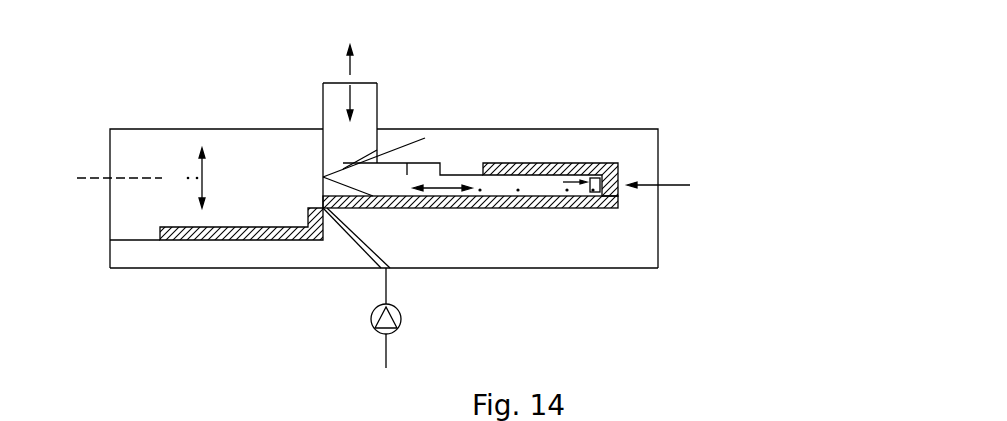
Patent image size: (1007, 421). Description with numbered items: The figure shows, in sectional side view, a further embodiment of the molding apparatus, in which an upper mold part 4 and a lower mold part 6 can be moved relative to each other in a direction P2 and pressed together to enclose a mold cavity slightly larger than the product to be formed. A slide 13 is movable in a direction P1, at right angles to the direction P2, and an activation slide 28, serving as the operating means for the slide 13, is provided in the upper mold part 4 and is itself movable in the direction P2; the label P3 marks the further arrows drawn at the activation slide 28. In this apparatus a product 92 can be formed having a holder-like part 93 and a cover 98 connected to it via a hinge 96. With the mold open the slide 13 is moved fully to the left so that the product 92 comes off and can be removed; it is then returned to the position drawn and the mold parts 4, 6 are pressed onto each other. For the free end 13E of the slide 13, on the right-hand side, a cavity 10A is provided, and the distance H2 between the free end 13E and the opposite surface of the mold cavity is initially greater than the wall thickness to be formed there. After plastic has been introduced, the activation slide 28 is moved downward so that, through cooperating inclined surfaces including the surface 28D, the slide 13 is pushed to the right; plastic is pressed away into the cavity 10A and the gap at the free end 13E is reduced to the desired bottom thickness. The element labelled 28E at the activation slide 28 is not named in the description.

The upper mold part 4 is at (658, 149).
The lower mold part 6 is at (658, 252).
The activation slide 28 is at (370, 83).
The valve flap 28E is at (425, 138).
The inclined surface 28D is at (387, 265).
The hinge 96 is at (315, 182).
The cover 98 is at (245, 240).
The holder-like part 93 is at (588, 155).
The product 92 is at (480, 190).
The slide 13 is at (518, 190).
The free end of the slide 13E is at (567, 190).
The cavity 10A is at (596, 192).
The direction of slide movement P1 is at (445, 185).
The direction of mold part movement P2 is at (126, 178).
The pressure P3 is at (347, 71).
The distance between free end and opposite surface H2 is at (674, 185).